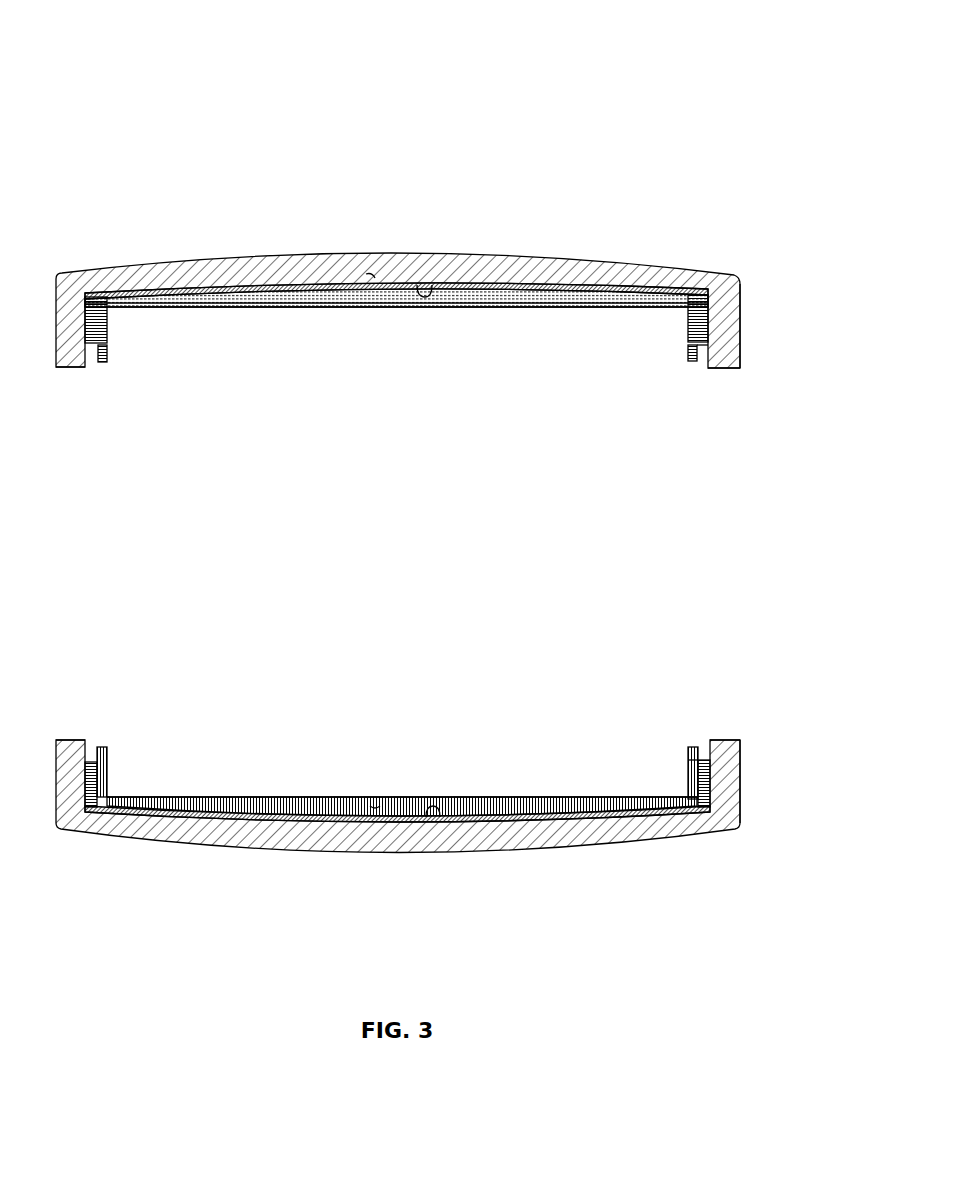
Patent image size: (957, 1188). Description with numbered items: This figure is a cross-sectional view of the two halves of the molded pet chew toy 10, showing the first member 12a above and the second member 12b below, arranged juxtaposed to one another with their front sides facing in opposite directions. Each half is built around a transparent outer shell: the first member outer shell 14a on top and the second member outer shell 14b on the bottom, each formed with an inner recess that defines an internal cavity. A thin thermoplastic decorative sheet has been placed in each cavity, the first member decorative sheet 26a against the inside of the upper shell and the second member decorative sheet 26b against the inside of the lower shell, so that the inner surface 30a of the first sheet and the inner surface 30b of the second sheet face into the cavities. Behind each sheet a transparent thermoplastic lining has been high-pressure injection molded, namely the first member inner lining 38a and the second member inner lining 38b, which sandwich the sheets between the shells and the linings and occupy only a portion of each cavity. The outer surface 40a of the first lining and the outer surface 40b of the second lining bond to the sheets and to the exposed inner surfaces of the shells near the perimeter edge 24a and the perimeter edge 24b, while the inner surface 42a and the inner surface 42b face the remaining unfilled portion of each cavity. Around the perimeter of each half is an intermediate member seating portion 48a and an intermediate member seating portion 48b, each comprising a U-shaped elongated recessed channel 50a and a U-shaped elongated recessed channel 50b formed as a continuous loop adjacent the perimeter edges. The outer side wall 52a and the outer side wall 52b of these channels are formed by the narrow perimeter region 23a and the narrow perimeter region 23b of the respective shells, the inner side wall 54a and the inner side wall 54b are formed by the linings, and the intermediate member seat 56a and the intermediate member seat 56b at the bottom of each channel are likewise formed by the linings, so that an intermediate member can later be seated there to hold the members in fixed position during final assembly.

The molded pet chew toy 10 is at (148, 70).
The first member 12a is at (424, 297).
The second member 12b is at (422, 772).
The first member outer shell 14a is at (290, 258).
The second member outer shell 14b is at (252, 855).
The narrow perimeter region 23a is at (741, 353).
The narrow perimeter region 23b is at (741, 752).
The perimeter edge 24a is at (66, 370).
The perimeter edge 24b is at (72, 738).
The first member decorative sheet 26a is at (565, 285).
The second member decorative sheet 26b is at (520, 830).
The inner surface 30a is at (432, 285).
The inner surface 30b is at (440, 817).
The first member inner lining 38a is at (495, 305).
The second member inner lining 38b is at (295, 805).
The outer surface 40a is at (366, 274).
The outer surface 40b is at (374, 806).
The inner surface 42a is at (265, 310).
The inner surface 42b is at (520, 812).
The intermediate member seating portion 48a is at (86, 460).
The intermediate member seating portion 48b is at (88, 640).
The U-shaped elongated recessed channel 50a is at (126, 380).
The U-shaped elongated recessed channel 50b is at (136, 720).
The outer side wall 52a is at (708, 370).
The outer side wall 52b is at (707, 745).
The inner side wall 54a is at (692, 358).
The inner side wall 54b is at (692, 748).
The intermediate member seat 56a is at (690, 335).
The intermediate member seat 56b is at (695, 772).